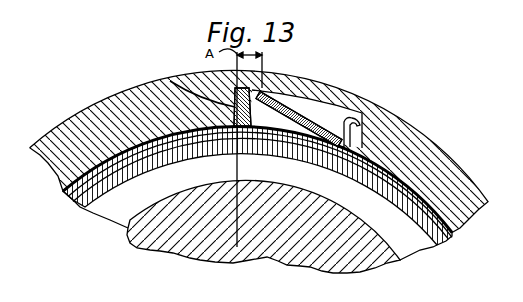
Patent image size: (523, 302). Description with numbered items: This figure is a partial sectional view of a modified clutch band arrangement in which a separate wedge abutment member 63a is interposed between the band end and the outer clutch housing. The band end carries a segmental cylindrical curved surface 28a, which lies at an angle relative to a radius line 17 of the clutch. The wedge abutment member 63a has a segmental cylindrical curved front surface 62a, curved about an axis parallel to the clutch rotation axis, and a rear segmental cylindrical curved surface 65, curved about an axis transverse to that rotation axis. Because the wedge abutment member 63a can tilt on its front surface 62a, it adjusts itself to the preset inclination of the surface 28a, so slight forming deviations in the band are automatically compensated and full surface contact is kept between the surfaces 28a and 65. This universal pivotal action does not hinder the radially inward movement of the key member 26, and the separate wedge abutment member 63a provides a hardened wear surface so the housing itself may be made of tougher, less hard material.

The radius line 17 is at (237, 171).
The key member 26 is at (303, 107).
The segmental cylindrical curved surface 28a is at (271, 128).
The segmental cylindrical curved front surface 62a is at (170, 81).
The wedge abutment member 63a is at (211, 74).
The rear segmental cylindrical curved surface 65 is at (256, 91).